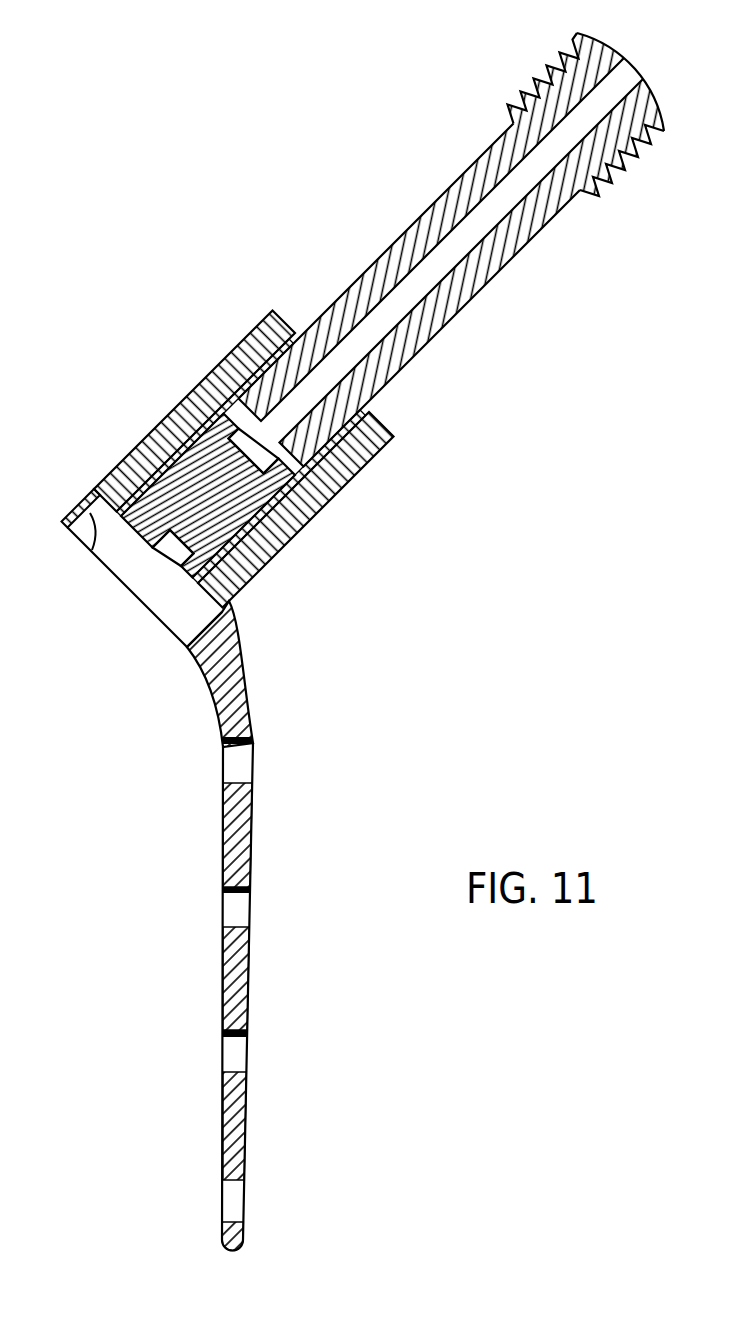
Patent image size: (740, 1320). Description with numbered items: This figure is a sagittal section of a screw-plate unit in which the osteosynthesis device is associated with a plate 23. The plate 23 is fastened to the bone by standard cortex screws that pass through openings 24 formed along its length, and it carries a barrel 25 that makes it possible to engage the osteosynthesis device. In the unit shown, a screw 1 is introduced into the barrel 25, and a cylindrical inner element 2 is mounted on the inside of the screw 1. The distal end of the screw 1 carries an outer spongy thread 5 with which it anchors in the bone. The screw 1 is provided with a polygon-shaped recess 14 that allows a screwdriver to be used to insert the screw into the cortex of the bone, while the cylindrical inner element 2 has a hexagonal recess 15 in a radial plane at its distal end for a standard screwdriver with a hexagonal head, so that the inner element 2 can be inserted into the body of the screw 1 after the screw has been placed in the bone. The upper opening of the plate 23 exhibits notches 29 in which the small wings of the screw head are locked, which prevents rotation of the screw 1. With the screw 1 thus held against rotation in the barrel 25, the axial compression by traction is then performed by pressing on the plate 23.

The screw 1 is at (449, 304).
The outer thread 5 is at (620, 173).
The barrel 25 is at (187, 390).
The inner element 2 is at (302, 520).
The recess 14 is at (278, 446).
The notches 29 is at (93, 550).
The hexagonal recess 15 is at (173, 540).
The plate 23 is at (213, 707).
The openings 24 is at (240, 913).